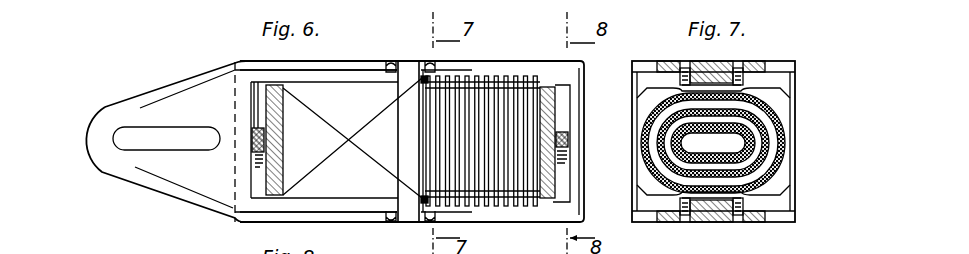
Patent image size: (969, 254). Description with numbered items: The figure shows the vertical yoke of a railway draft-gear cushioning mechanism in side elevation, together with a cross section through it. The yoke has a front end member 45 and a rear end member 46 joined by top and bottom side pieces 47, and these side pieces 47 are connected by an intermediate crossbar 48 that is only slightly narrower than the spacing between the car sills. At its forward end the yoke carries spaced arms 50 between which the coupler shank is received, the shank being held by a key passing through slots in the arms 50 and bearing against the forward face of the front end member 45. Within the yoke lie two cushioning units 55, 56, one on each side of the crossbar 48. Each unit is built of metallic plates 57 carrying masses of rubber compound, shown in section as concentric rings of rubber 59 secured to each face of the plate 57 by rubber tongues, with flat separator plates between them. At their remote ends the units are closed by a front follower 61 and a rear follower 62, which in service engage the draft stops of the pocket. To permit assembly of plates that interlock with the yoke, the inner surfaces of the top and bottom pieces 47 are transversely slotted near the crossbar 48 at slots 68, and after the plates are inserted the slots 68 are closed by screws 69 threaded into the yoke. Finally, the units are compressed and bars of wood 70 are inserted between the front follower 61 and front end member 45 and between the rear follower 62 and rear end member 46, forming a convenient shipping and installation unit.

In FIG. 6, the front end member 45 is at (233, 103).
In FIG. 6, the rear end member 46 is at (579, 102).
In FIG. 6, the side pieces 47 is at (333, 57).
In FIG. 7, the side pieces 47 is at (703, 72).
In FIG. 6, the crossbar 48 is at (400, 140).
In FIG. 6, the spaced arms 50 is at (102, 115).
In FIG. 6, the cushioning unit 55 is at (298, 184).
In FIG. 6, the cushioning unit 56 is at (503, 208).
In FIG. 7, the metallic plates 57 is at (641, 180).
In FIG. 7, the concentric rings of rubber 59 is at (778, 137).
In FIG. 6, the front follower 61 is at (288, 93).
In FIG. 6, the rear follower 62 is at (549, 86).
In FIG. 6, the slots 68 is at (421, 83).
In FIG. 7, the slots 68 is at (741, 85).
In FIG. 6, the screws 69 is at (428, 58).
In FIG. 7, the screws 69 is at (741, 66).
In FIG. 6, the bars of wood 70 is at (253, 79).